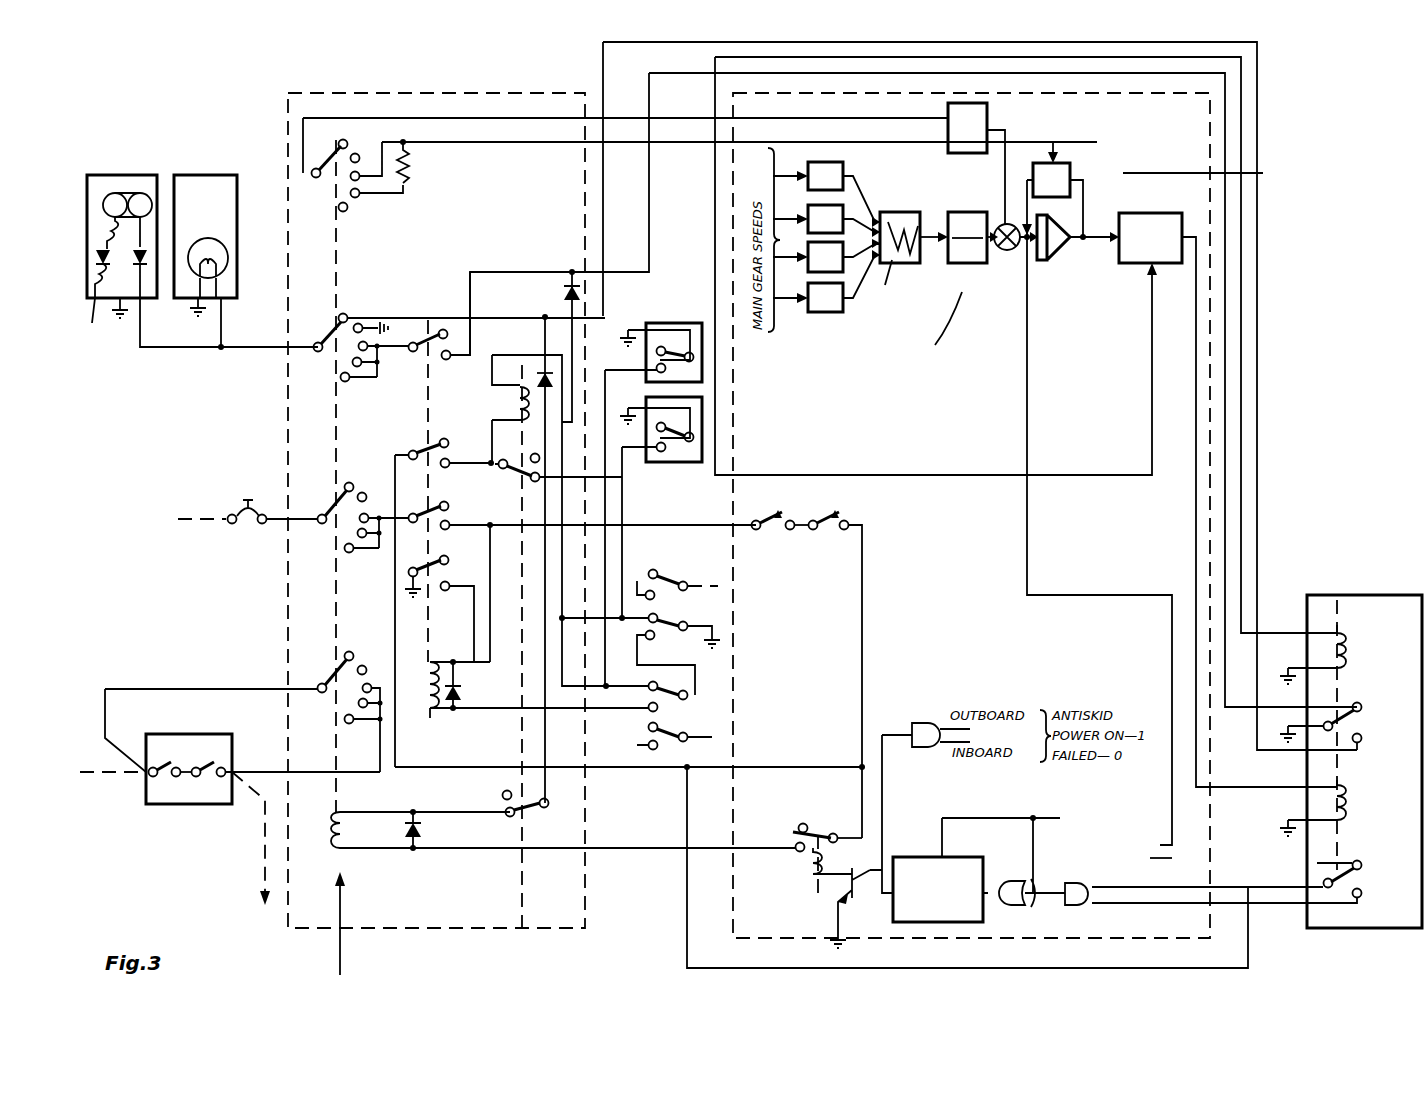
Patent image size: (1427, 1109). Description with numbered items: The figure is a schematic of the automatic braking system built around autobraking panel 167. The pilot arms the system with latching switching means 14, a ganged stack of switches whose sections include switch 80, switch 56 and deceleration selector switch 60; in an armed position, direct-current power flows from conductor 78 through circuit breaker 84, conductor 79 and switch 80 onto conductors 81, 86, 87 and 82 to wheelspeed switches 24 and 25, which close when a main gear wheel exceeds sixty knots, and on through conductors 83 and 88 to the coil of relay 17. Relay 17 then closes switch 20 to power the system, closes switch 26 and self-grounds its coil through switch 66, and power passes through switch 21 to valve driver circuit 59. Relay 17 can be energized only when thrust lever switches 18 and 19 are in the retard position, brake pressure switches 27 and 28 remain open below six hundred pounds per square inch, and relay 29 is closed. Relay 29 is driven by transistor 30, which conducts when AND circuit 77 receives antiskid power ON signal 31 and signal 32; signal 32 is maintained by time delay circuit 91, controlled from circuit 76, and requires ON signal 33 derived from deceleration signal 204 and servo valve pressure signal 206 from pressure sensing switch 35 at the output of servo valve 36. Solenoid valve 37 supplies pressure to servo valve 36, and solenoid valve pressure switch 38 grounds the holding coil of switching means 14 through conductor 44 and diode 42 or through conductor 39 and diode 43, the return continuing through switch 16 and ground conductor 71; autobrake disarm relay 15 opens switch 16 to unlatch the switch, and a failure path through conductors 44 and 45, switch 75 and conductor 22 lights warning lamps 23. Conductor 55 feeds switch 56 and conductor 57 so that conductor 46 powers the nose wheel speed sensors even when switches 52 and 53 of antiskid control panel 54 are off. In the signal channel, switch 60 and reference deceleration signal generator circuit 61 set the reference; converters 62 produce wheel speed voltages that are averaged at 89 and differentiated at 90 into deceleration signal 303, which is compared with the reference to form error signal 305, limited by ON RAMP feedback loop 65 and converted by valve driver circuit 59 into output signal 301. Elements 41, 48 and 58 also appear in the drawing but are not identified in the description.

The automatic braking switching means 14 is at (340, 931).
The autobrake disarm relay 15 is at (512, 397).
The switch 16 is at (530, 820).
The relay 17 is at (432, 738).
The thrust lever switch 18 is at (672, 616).
The thrust lever switch 19 is at (672, 718).
The switch 20 is at (414, 452).
The switch 21 is at (506, 481).
The conductor 22 is at (250, 348).
The warning lamps 23 is at (118, 175).
The wheelspeed switch 24 is at (770, 514).
The wheelspeed switch 25 is at (826, 512).
The switch 26 is at (413, 517).
The brake pressure switch 27 is at (676, 322).
The brake pressure switch 28 is at (702, 440).
The relay 29 is at (813, 838).
The transistor 30 is at (837, 878).
The ON logic signal 31 is at (885, 866).
The ON signal 32 is at (848, 911).
The ON signal 33 is at (1068, 883).
The pressure sensing switch 35 is at (1360, 885).
The servo valve 36 is at (1348, 808).
The solenoid valve 37 is at (1346, 652).
The solenoid valve pressure switch 38 is at (1360, 720).
The conductor 39 is at (1225, 464).
The switch 41 is at (543, 337).
The diode 42 is at (555, 377).
The diode 43 is at (560, 296).
The conductor 44 is at (1257, 512).
The conductor 45 is at (404, 317).
The conductor 46 is at (265, 872).
The power supply 28V DC 48 is at (108, 762).
The switch 52 is at (164, 758).
The switch 53 is at (208, 758).
The antiskid control panel 54 is at (181, 806).
The conductor 55 is at (198, 689).
The switch 56 is at (352, 699).
The conductor 57 is at (357, 770).
The conductor 58 is at (262, 770).
The valve driver circuit 59 is at (1129, 213).
The switch 60 is at (348, 183).
The reference deceleration signal generator circuit 61 is at (990, 118).
The converters 62 is at (846, 170).
The ON RAMP feedback loop 65 is at (1070, 186).
The switch 66 is at (414, 570).
The ground conductor 71 is at (445, 812).
The switch 75 is at (352, 354).
The circuit 76 is at (1010, 903).
The AND circuit 77 is at (846, 933).
The conductor 78 is at (230, 524).
The conductor 79 is at (263, 524).
The switch 80 is at (352, 522).
The conductor 81 is at (395, 622).
The conductor 82 is at (862, 644).
The conductor 83 is at (668, 525).
The circuit breaker 84 is at (247, 498).
The conductor 86 is at (630, 767).
The conductor 87 is at (812, 765).
The conductor 88 is at (493, 612).
The averaging circuit 89 is at (900, 212).
The differentiator 90 is at (970, 212).
The time delay circuit 91 is at (981, 922).
The autobraking panel 167 is at (437, 928).
The signal 204 is at (1182, 854).
The signal 206 is at (1248, 888).
The output signal 301 is at (1198, 236).
The deceleration signal 303 is at (1005, 266).
The error signal 305 is at (1034, 268).